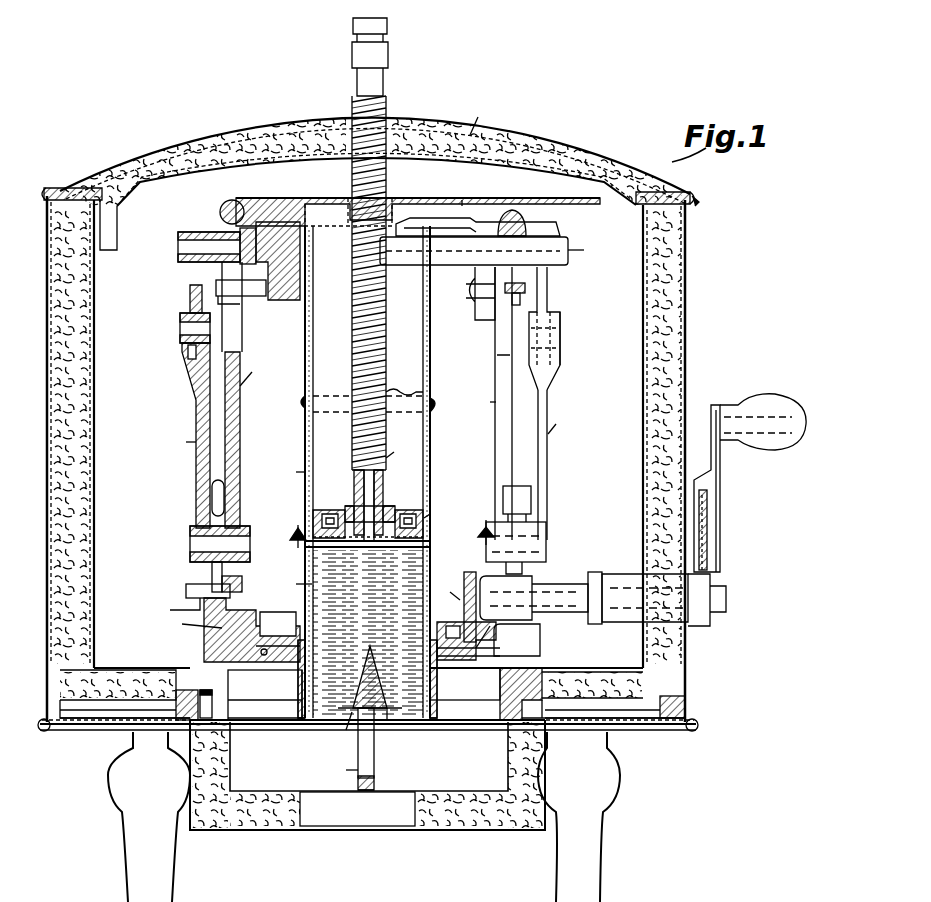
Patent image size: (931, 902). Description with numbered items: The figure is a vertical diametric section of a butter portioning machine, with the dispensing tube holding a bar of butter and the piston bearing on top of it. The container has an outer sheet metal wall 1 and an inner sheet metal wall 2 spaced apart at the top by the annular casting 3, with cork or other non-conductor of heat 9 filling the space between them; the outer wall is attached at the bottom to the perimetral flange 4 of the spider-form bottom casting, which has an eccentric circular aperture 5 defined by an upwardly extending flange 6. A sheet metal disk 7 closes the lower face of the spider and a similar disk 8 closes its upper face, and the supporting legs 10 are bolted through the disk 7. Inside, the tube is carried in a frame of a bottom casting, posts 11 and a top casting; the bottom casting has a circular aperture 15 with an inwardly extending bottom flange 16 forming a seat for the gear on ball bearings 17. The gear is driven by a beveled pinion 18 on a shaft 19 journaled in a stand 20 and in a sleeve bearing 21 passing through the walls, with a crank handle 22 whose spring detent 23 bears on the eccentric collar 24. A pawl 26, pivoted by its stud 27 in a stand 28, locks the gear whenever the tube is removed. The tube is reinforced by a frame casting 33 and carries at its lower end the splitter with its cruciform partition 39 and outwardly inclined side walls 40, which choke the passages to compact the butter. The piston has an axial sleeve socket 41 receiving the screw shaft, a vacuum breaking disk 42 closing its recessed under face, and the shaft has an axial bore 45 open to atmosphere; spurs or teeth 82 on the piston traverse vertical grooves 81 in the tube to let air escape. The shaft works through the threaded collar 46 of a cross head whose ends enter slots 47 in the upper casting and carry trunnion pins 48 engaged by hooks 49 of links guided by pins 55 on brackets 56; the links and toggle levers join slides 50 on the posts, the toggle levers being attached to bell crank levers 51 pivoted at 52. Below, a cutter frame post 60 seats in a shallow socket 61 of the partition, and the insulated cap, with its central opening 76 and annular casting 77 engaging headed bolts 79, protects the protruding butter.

The outer sheet metal wall 1 is at (682, 334).
The inner sheet metal wall 2 is at (368, 434).
The annular casting 3 is at (700, 204).
The perimetral flange 4 is at (685, 700).
The circular aperture 5 is at (292, 700).
The flange 6 is at (265, 702).
The sheet metal disk 7 is at (96, 732).
The sheet metal disk 8 is at (140, 690).
The non-conductor of heat 9 is at (380, 132).
The supporting legs 10 is at (364, 817).
The posts 11 is at (526, 288).
The circular aperture 15 is at (283, 695).
The bottom flange 16 is at (265, 686).
The ball bearings 17 is at (470, 660).
The beveled pinion 18 is at (497, 548).
The shaft 19 is at (564, 590).
The stand 20 is at (508, 634).
The sleeve bearing 21 is at (477, 567).
The crank handle 22 is at (722, 484).
The spring detent 23 is at (710, 548).
The collar 24 is at (712, 624).
The pawl 26 is at (252, 562).
The stud 27 is at (228, 604).
The stand 28 is at (240, 592).
The frame casting 33 is at (304, 400).
The cruciform partition 39 is at (356, 672).
The outwardly inclined side walls 40 is at (420, 670).
The axial sleeve socket 41 is at (396, 512).
The metal disk 42 is at (380, 549).
The axial bore 45 is at (383, 500).
The threaded collar 46 is at (392, 204).
The slots 47 is at (278, 261).
The trunnion pin 48 is at (236, 232).
The hooks 49 is at (236, 206).
The slides 50 is at (532, 500).
The bell crank levers 51 is at (190, 292).
The pivot 52 is at (182, 248).
The pins 55 is at (190, 300).
The brackets 56 is at (262, 296).
The vertical post 60 is at (374, 780).
The shallow socket 61 is at (374, 752).
The central opening 76 is at (367, 775).
The annular casting 77 is at (506, 722).
The headed bolts 79 is at (228, 704).
The vertical grooves 81 is at (396, 452).
The spurs or teeth 82 is at (304, 530).